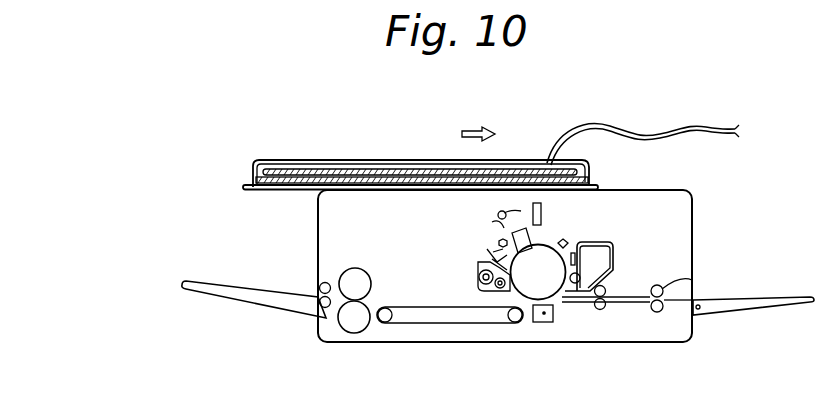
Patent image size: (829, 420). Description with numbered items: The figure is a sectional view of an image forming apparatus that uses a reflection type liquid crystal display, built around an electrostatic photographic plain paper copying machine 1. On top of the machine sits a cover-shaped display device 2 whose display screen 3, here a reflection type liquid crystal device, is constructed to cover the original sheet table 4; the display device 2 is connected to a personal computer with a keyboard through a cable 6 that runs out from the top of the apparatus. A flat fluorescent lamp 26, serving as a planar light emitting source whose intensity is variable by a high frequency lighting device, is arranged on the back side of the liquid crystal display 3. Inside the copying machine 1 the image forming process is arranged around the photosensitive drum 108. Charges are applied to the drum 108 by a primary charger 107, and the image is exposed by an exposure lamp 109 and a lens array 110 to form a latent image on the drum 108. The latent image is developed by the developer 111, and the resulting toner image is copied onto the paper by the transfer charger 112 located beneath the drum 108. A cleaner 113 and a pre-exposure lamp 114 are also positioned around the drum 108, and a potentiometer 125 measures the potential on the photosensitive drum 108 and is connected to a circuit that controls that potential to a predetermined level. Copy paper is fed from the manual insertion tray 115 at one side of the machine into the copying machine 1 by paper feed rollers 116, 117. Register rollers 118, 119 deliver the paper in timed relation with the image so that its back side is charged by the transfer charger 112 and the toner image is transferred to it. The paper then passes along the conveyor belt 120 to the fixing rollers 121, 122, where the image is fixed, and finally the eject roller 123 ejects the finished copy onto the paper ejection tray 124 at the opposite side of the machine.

The electrostatic photographic plain paper copying machine 1 is at (321, 233).
The cover-shaped display device 2 is at (340, 163).
The display screen 3 is at (297, 189).
The original sheet table 4 is at (244, 191).
The cable 6 is at (690, 125).
The flat fluorescent lamp 26 is at (305, 170).
The primary charger 107 is at (498, 226).
The photosensitive drum 108 is at (553, 244).
The exposure lamp 109 is at (505, 212).
The lens array 110 is at (543, 212).
The developer 111 is at (615, 252).
The transfer charger 112 is at (556, 319).
The cleaner 113 is at (479, 263).
The pre-exposure lamp 114 is at (499, 242).
The manual insertion tray 115 is at (735, 310).
The paper feed roller 116 is at (658, 313).
The paper feed roller 117 is at (665, 288).
The register roller 118 is at (602, 310).
The register roller 119 is at (605, 290).
The conveyor belt 120 is at (424, 310).
The fixing roller 121 is at (352, 332).
The fixing roller 122 is at (344, 281).
The eject roller 123 is at (321, 305).
The paper ejection tray 124 is at (250, 300).
The potentiometer 125 is at (568, 242).